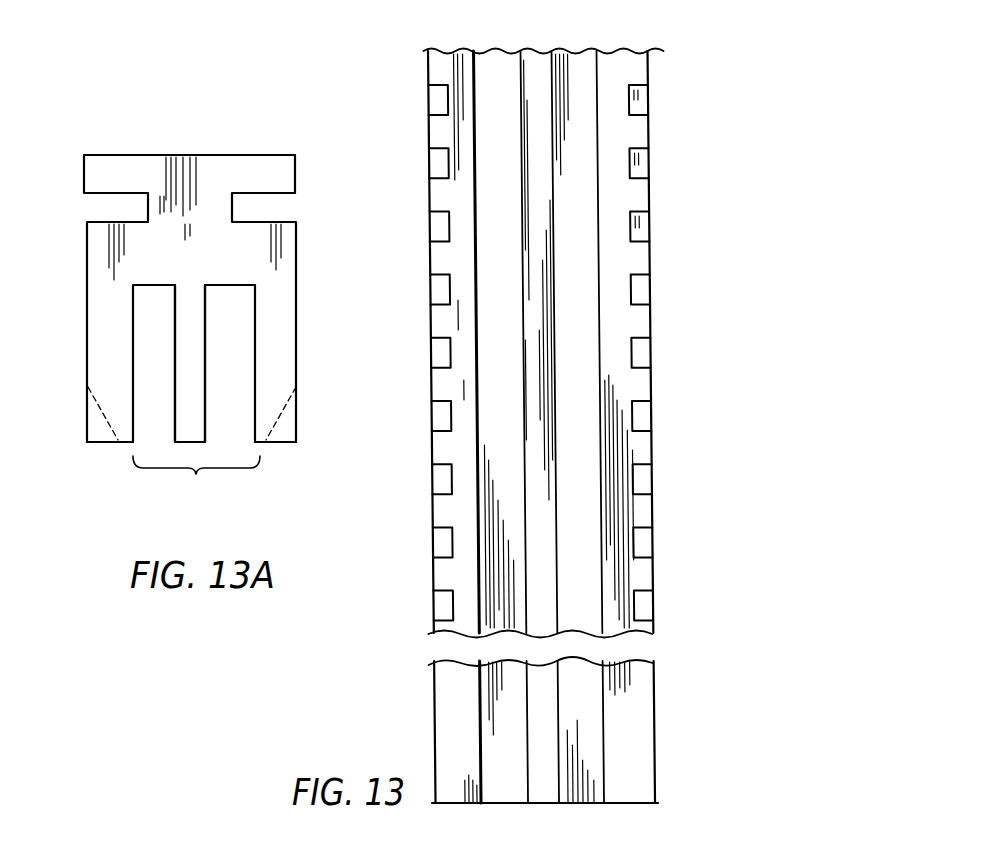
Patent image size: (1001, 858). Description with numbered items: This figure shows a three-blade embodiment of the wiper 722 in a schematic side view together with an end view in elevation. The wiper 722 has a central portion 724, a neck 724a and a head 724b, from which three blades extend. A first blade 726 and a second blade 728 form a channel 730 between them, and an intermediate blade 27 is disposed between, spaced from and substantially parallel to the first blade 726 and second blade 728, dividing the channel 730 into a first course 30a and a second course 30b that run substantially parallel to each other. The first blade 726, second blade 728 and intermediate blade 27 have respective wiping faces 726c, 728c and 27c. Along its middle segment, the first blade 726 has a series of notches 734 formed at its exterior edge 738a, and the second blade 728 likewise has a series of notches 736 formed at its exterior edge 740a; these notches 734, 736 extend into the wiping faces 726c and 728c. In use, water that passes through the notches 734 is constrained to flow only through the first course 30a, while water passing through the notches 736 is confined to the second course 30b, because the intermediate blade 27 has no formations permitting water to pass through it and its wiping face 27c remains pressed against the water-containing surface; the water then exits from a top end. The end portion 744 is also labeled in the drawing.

In FIG. 13A, the wiper 722 is at (84, 304).
In FIG. 13, the wiper 722 is at (421, 354).
In FIG. 13A, the central portion 724 is at (190, 233).
In FIG. 13A, the neck 724a is at (183, 213).
In FIG. 13A, the head 724b is at (257, 123).
In FIG. 13A, the first blade 726 is at (107, 355).
In FIG. 13, the first blade 726 is at (438, 322).
In FIG. 13A, the wiping face 726c is at (108, 444).
In FIG. 13, the wiping face 726c is at (447, 131).
In FIG. 13A, the second blade 728 is at (278, 330).
In FIG. 13, the second blade 728 is at (635, 327).
In FIG. 13A, the wiping face 728c is at (270, 445).
In FIG. 13, the wiping face 728c is at (610, 140).
In FIG. 13A, the intermediate blade 27 is at (188, 334).
In FIG. 13, the intermediate blade 27 is at (542, 408).
In FIG. 13A, the wiping face 27c is at (184, 444).
In FIG. 13, the wiping face 27c is at (545, 78).
In FIG. 13A, the first course 30a is at (148, 306).
In FIG. 13, the first course 30a is at (497, 440).
In FIG. 13A, the second course 30b is at (225, 306).
In FIG. 13, the second course 30b is at (572, 498).
In FIG. 13A, the channel 730 is at (196, 474).
In FIG. 13, the channel 730 is at (578, 157).
In FIG. 13A, the notches 734 is at (88, 444).
In FIG. 13, the notches 734 is at (432, 228).
In FIG. 13A, the notches 736 is at (296, 444).
In FIG. 13, the notches 736 is at (635, 165).
In FIG. 13, the exterior edge 738a is at (440, 158).
In FIG. 13, the exterior edge 740a is at (762, 558).
In FIG. 13, the end portion 744 is at (557, 805).